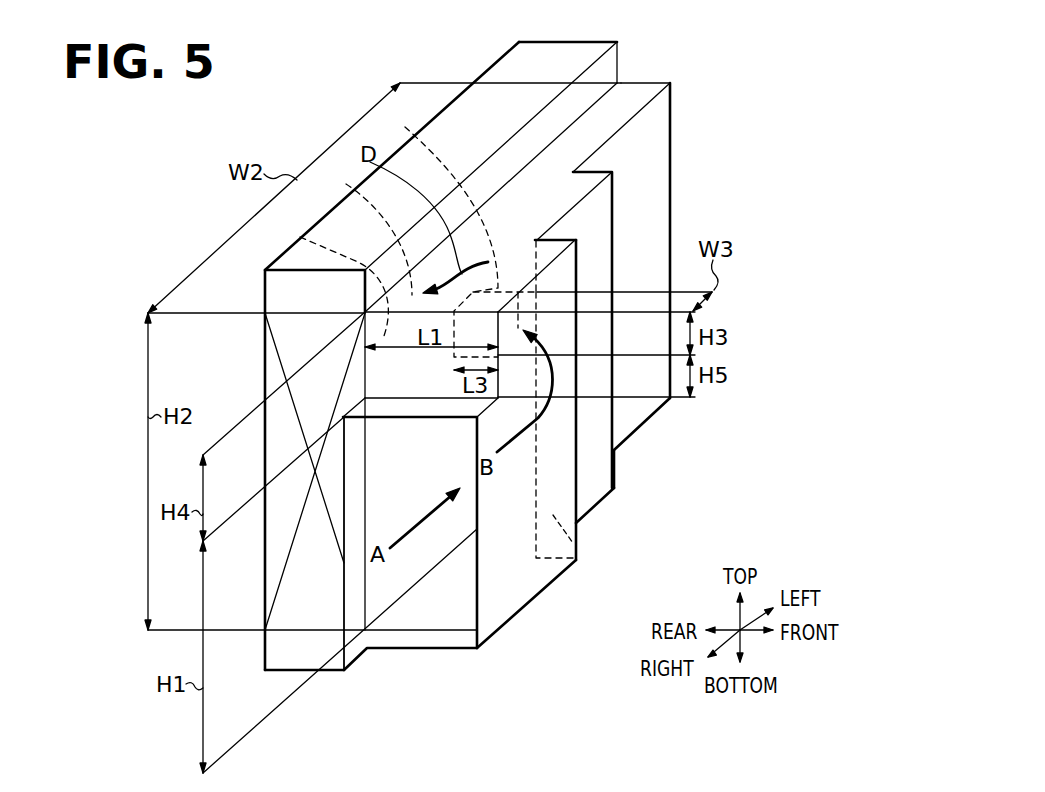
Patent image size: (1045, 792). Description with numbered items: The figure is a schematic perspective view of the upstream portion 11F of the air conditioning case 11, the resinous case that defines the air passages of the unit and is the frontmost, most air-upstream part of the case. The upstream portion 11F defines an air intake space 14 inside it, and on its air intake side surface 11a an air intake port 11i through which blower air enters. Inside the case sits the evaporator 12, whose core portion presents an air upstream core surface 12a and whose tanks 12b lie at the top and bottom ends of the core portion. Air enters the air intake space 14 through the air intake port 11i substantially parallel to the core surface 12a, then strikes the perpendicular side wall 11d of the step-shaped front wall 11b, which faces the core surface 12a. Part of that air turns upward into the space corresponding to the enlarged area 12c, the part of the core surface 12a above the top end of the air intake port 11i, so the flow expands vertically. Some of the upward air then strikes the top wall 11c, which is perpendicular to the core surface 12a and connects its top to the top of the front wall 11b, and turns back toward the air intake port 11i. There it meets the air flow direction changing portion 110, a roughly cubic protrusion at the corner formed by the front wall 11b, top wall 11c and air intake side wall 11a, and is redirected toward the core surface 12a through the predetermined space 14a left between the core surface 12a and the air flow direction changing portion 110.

The air conditioning case 11 is at (562, 42).
The upstream portion 11F is at (650, 137).
The air intake side surface 11a is at (372, 262).
The front wall 11b is at (500, 523).
The top wall 11c is at (540, 190).
The perpendicular side wall 11d is at (577, 548).
The air intake port 11i is at (397, 622).
The air flow direction changing portion 110 is at (463, 228).
The evaporator 12 is at (272, 357).
The core surface 12a is at (378, 452).
The tanks 12b is at (285, 290).
The enlarged area 12c is at (322, 279).
The air intake space 14 is at (457, 592).
The predetermined space 14a is at (368, 227).